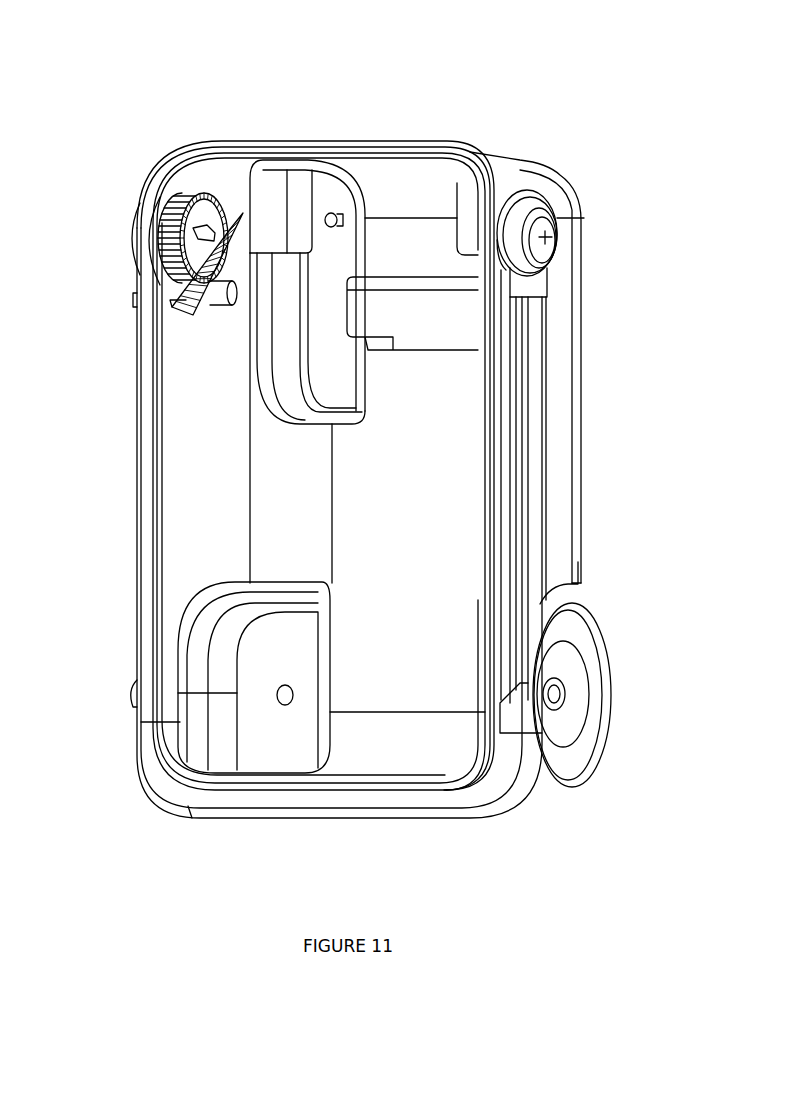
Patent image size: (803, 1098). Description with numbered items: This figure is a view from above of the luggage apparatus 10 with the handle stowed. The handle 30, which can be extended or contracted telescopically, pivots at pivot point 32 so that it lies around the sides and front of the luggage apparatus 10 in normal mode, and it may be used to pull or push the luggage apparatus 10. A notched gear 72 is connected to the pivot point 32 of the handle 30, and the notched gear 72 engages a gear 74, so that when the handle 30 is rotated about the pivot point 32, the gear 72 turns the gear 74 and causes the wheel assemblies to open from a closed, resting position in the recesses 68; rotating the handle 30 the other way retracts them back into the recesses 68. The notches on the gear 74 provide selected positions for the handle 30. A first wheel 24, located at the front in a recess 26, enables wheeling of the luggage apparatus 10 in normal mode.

The luggage apparatus 10 is at (336, 115).
The first wheels 24 is at (570, 753).
The recesses 26 is at (253, 652).
The handle 30 is at (538, 400).
The pivot point 32 is at (547, 247).
The recesses 68 is at (277, 382).
The notched gear 72 is at (187, 247).
The gear 74 is at (183, 312).